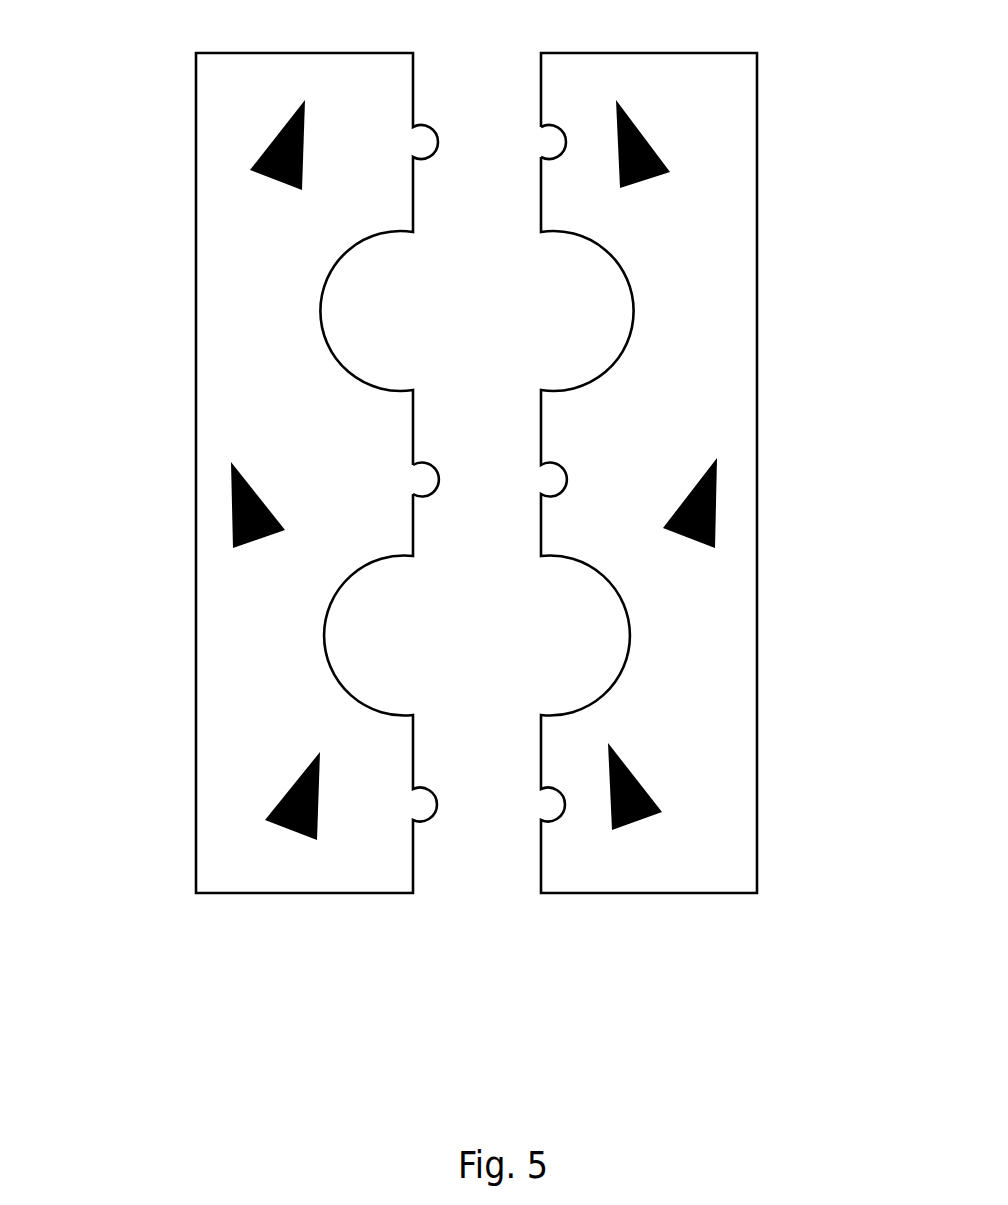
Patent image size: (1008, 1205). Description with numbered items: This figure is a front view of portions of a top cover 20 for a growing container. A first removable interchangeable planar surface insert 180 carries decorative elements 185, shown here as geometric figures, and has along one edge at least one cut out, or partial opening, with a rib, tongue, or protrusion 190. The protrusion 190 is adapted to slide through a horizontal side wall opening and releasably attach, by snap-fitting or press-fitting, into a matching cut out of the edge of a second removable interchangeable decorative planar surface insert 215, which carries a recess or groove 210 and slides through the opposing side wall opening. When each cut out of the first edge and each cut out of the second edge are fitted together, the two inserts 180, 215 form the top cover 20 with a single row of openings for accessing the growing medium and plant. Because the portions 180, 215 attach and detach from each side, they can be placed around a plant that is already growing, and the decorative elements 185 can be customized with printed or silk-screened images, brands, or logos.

The top cover 20 is at (462, 533).
The first removable interchangeable planar surface insert 180 is at (196, 195).
The decorative elements 185 is at (230, 503).
The protrusion 190 is at (416, 497).
The recess 210 is at (542, 128).
The second removable interchangeable decorative planar surface insert 215 is at (757, 246).